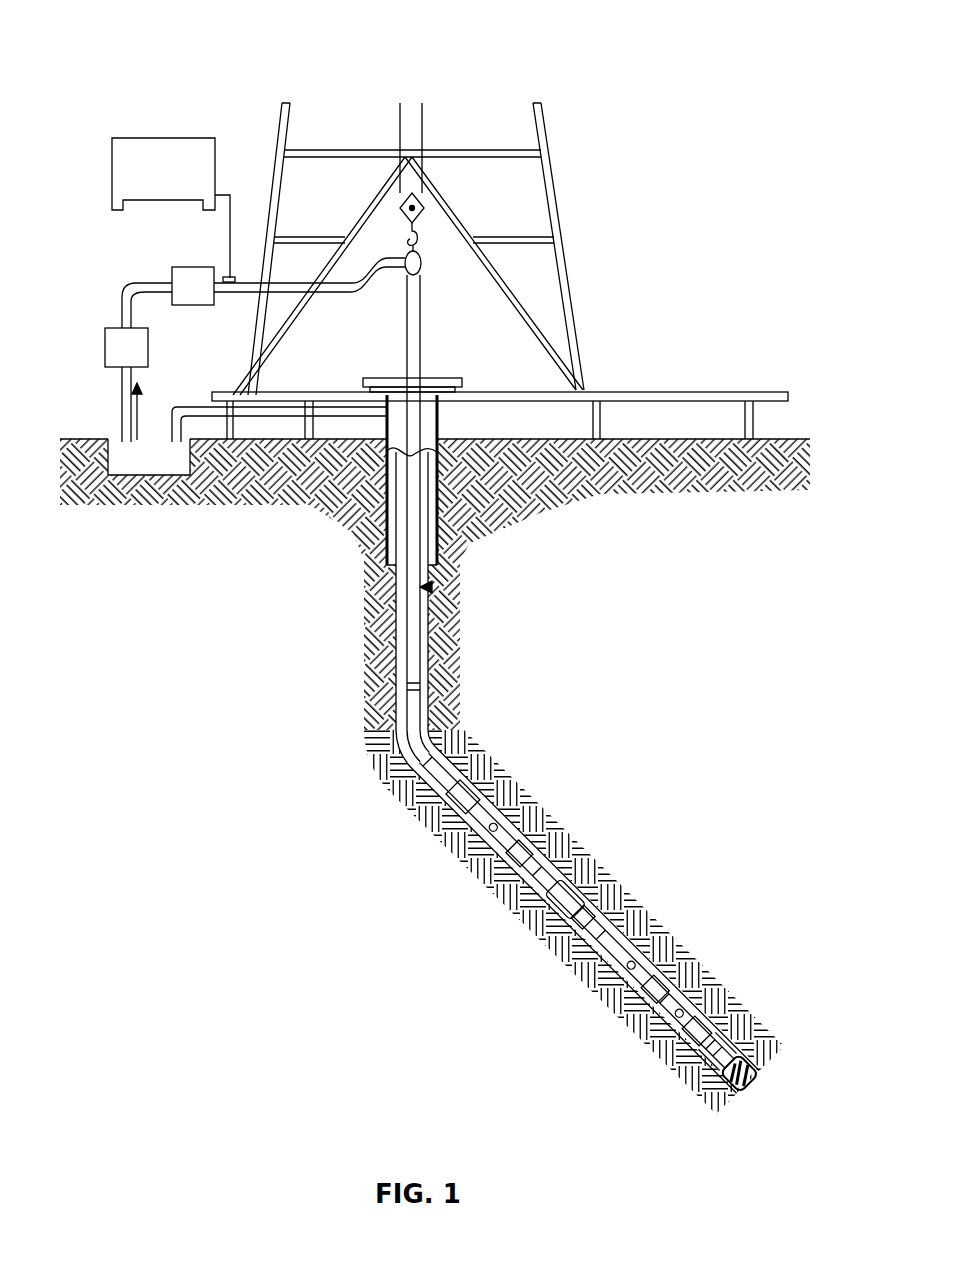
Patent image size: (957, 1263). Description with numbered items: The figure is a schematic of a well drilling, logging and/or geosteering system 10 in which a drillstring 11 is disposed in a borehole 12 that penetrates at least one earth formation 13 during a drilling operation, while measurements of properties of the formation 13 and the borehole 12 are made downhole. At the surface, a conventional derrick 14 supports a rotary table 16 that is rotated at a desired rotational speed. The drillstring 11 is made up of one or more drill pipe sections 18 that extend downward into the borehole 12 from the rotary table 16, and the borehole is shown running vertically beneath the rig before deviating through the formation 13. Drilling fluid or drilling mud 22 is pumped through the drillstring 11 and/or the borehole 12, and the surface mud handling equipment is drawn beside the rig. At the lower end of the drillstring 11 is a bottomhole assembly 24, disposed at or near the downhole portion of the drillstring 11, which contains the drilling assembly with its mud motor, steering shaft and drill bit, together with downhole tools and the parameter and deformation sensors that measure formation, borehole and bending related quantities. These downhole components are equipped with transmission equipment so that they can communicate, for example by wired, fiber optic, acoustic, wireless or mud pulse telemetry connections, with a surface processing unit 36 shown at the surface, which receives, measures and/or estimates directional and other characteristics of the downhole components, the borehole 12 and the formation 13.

The well drilling, logging and/or geosteering system 10 is at (190, 39).
The drillstring 11 is at (432, 587).
The borehole 12 is at (432, 737).
The earth formation 13 is at (483, 490).
The derrick 14 is at (567, 250).
The rotary table 16 is at (437, 377).
The drill pipe sections 18 is at (405, 640).
The drilling fluid 22 is at (115, 473).
The bottomhole assembly 24 is at (731, 961).
The surface processing unit 36 is at (145, 137).